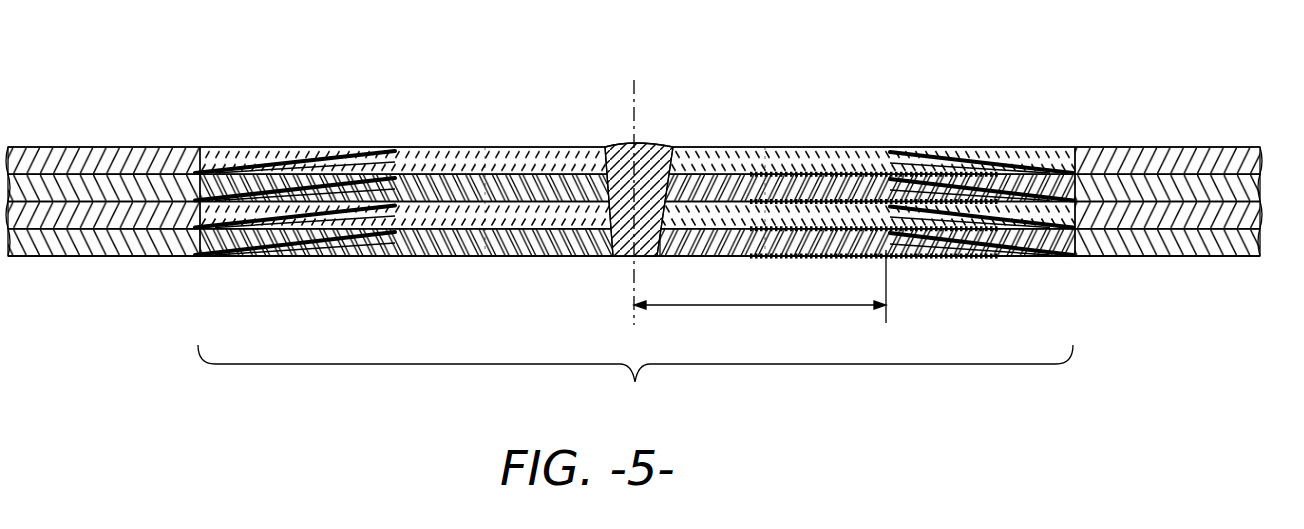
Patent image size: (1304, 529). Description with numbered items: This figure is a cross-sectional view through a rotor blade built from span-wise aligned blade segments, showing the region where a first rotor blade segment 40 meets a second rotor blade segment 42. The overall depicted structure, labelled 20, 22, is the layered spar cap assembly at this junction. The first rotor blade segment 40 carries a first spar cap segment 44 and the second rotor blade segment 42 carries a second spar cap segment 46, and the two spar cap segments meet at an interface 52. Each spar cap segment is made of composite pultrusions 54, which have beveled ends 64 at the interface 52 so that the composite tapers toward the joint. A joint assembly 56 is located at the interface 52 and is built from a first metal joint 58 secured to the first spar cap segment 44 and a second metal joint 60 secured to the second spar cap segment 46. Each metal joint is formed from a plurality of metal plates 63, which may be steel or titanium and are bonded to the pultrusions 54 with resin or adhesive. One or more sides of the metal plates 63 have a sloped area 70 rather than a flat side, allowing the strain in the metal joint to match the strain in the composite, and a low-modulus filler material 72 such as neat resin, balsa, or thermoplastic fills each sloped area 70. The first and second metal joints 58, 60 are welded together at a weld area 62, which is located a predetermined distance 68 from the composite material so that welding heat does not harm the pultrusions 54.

The composite structure 20 is at (1076, 89).
The composite panel assembly 22 is at (634, 201).
The first rotor blade segment 40 is at (70, 140).
The second rotor blade segment 42 is at (1198, 140).
The first spar cap segment 44 is at (150, 147).
The second spar cap segment 46 is at (1104, 147).
The interface 52 is at (635, 383).
The pultrusion 54 is at (72, 244).
The joint assembly 56 is at (596, 120).
The first metal joint 58 is at (412, 140).
The second metal joint 60 is at (875, 140).
The weld area 62 is at (647, 142).
The metal plates 63 is at (513, 147).
The beveled ends 64 is at (262, 188).
The predetermined distance 68 is at (748, 307).
The sloped area 70 is at (823, 147).
The filler material 72 is at (940, 147).